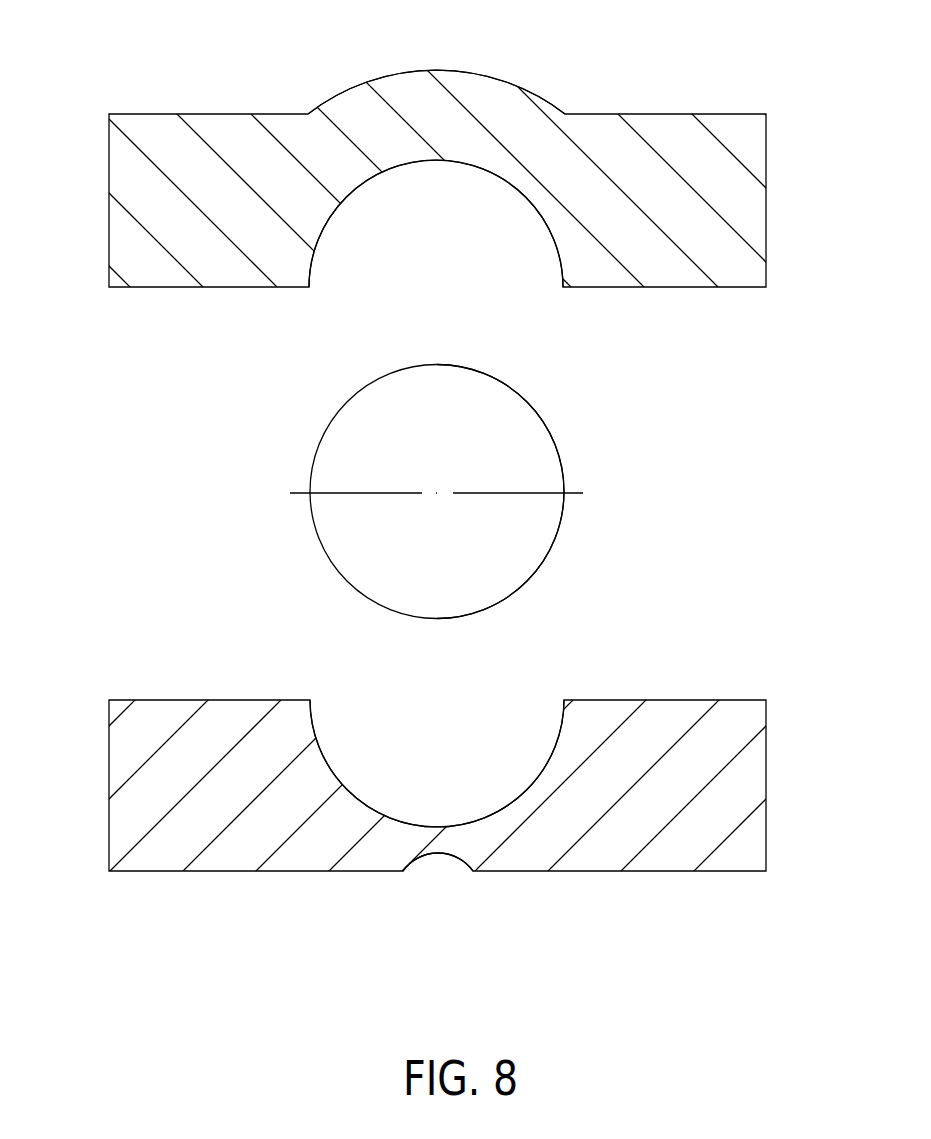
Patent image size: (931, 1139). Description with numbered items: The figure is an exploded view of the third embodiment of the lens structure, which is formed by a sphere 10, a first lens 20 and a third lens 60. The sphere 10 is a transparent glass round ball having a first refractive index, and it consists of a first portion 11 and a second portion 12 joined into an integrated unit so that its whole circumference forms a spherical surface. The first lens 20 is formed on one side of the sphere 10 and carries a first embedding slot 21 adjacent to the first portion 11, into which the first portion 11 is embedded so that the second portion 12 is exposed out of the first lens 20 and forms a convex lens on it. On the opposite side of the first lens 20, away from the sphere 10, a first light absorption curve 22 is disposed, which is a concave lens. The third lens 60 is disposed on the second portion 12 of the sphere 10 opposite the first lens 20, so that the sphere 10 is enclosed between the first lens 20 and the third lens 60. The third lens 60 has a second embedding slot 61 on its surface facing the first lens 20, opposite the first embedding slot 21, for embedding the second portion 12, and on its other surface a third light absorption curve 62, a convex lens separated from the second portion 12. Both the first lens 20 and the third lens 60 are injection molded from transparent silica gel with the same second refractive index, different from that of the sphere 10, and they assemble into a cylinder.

The sphere 10 is at (337, 456).
The first portion 11 is at (537, 573).
The second portion 12 is at (540, 417).
The first lens 20 is at (766, 727).
The first embedding slot 21 is at (350, 737).
The first light absorption curve 22 is at (473, 875).
The third lens 60 is at (128, 171).
The second embedding slot 61 is at (366, 251).
The third light absorption curve 62 is at (482, 75).